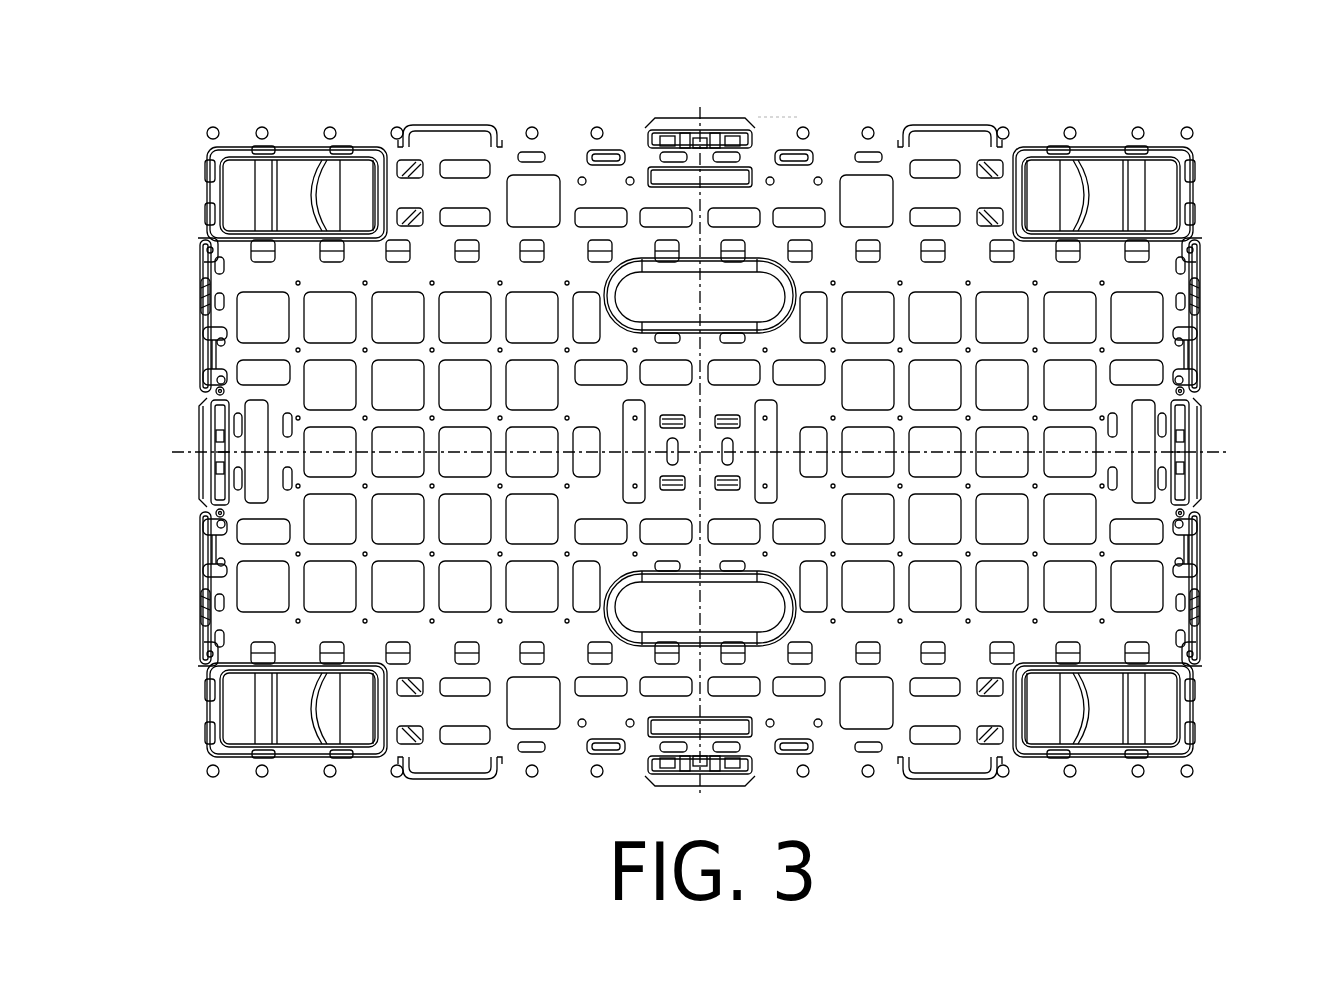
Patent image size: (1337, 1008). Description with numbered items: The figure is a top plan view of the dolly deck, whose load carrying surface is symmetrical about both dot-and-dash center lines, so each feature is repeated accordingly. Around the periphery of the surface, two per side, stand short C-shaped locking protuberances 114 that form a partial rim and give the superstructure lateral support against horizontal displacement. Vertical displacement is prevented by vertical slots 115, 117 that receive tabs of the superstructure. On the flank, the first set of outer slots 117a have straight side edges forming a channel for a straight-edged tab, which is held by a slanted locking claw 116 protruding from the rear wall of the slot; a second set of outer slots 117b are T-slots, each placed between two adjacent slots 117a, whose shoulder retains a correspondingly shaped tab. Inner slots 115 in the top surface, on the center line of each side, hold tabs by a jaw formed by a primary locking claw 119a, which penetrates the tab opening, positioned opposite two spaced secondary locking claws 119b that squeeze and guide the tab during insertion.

The locking protuberance 114 is at (455, 123).
The inner slot 115 is at (777, 120).
The locking claw 116 is at (197, 298).
The vertical slot 117 is at (1198, 405).
The first set of outer slots 117a is at (200, 268).
The second set of outer slots 117b is at (205, 430).
The primary locking claw 119a is at (1187, 455).
The secondary locking claw 119b is at (735, 120).